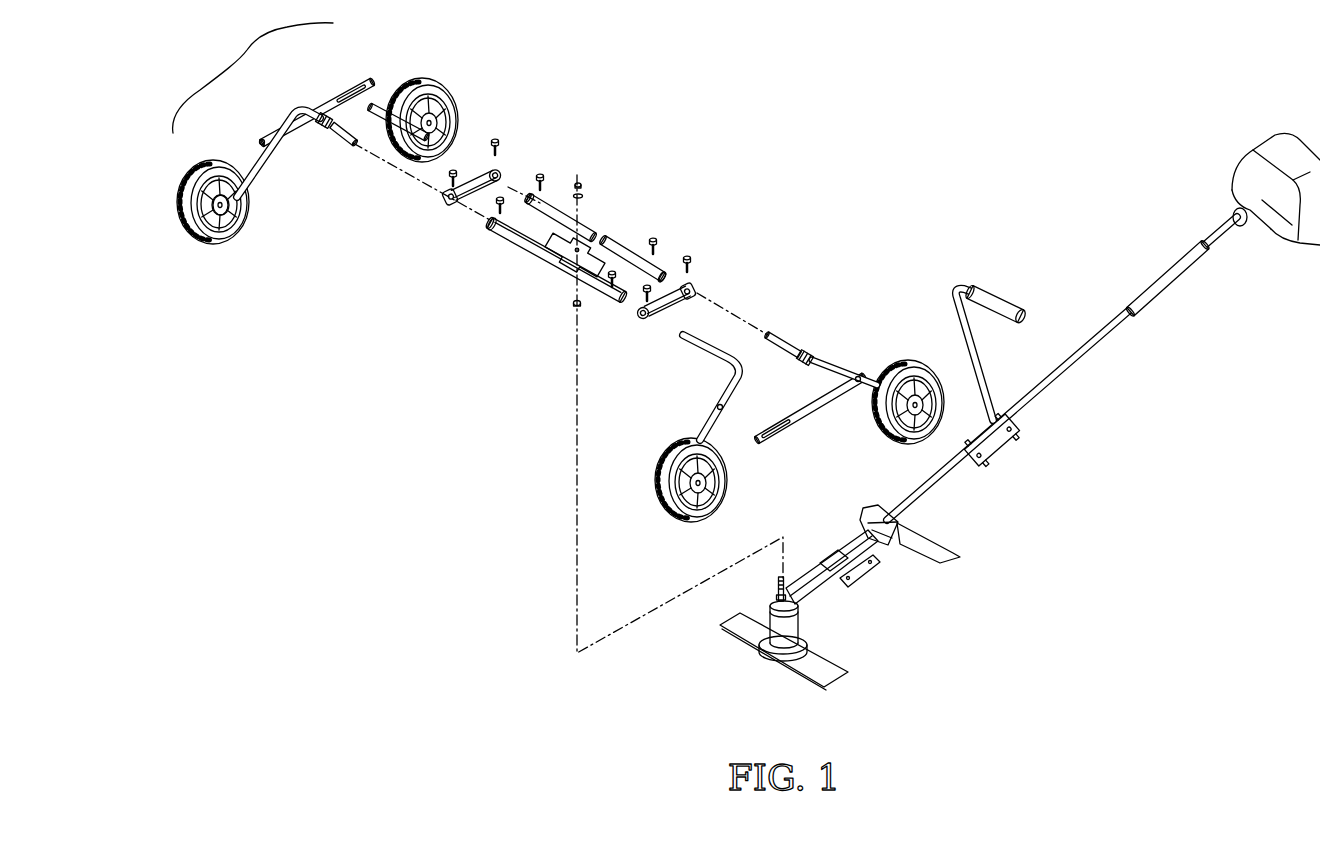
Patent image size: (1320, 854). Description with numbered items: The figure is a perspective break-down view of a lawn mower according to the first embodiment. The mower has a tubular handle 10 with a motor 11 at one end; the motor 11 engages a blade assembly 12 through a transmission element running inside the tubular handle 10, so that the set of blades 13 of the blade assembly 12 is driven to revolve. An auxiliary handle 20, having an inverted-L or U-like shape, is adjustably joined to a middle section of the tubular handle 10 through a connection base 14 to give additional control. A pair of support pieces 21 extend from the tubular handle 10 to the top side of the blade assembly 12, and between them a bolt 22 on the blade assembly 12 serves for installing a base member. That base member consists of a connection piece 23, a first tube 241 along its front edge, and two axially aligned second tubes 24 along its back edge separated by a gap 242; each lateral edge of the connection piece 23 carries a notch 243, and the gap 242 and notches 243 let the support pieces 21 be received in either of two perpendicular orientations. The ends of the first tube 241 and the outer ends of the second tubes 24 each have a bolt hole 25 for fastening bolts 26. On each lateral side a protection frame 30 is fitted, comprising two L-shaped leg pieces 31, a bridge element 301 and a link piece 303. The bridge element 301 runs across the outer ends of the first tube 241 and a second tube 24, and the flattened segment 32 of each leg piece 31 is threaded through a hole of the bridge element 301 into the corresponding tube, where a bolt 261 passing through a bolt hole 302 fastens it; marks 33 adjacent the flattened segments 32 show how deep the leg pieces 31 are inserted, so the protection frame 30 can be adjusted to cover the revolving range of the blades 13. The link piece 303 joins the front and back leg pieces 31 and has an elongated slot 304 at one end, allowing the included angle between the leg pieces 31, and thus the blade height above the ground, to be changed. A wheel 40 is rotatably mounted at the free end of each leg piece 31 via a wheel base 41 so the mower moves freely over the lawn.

The tubular handle 10 is at (1083, 363).
The motor 11 is at (1257, 163).
The blade assembly 12 is at (787, 630).
The blades 13 is at (847, 668).
The connection base 14 is at (1010, 447).
The auxiliary handle 20 is at (963, 287).
The support pieces 21 is at (797, 587).
The bolt 22 is at (776, 587).
The connection piece 23 is at (563, 253).
The second tubes 24 is at (557, 200).
The bolt hole 25 is at (537, 193).
The bolts 26 is at (540, 170).
The protection frame 30 is at (253, 78).
The leg pieces 31 is at (302, 127).
The flattened segment 32 is at (353, 146).
The marks 33 is at (323, 130).
The wheel 40 is at (210, 243).
The wheel base 41 is at (237, 212).
The first tube 241 is at (520, 243).
The gap 242 is at (600, 230).
The notch 243 is at (597, 264).
The bolt 261 is at (497, 138).
The bridge element 301 is at (472, 180).
The bolt hole 302 is at (443, 198).
The link piece 303 is at (313, 100).
The elongated slot 304 is at (347, 88).